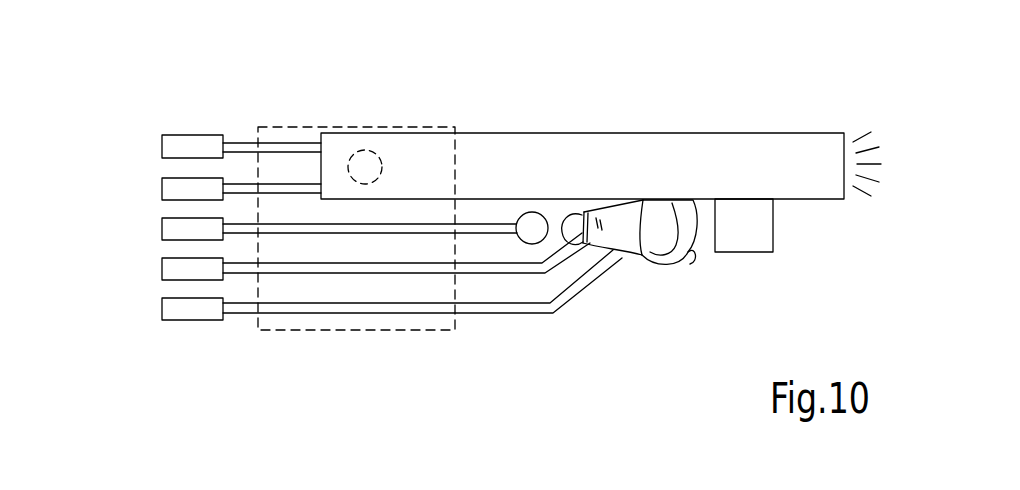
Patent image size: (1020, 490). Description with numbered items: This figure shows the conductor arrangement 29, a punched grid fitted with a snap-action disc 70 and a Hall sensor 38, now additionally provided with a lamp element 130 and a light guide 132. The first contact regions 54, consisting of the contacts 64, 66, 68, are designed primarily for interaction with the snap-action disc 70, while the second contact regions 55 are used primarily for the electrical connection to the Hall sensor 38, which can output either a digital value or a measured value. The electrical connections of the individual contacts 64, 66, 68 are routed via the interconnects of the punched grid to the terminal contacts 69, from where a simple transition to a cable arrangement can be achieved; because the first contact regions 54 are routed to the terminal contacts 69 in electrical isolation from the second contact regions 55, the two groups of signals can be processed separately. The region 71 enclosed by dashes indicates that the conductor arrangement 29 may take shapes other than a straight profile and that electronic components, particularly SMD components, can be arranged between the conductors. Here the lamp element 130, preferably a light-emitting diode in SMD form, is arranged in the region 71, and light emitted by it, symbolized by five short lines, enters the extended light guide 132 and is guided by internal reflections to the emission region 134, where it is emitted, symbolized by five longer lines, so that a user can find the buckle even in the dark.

The conductor arrangement 29 is at (196, 103).
The terminal contacts 69 is at (172, 149).
The region enclosed by dashes 71 is at (378, 127).
The light guide 132 is at (738, 158).
The lamp element 130 is at (372, 168).
The contact 68 is at (533, 228).
The first contact regions 54 is at (621, 270).
The contact 64 is at (573, 217).
The contact 66 is at (637, 220).
The snap-action disc 70 is at (643, 260).
The Hall sensor 38 is at (757, 233).
The second contact regions 55 is at (736, 278).
The emission region 134 is at (853, 190).